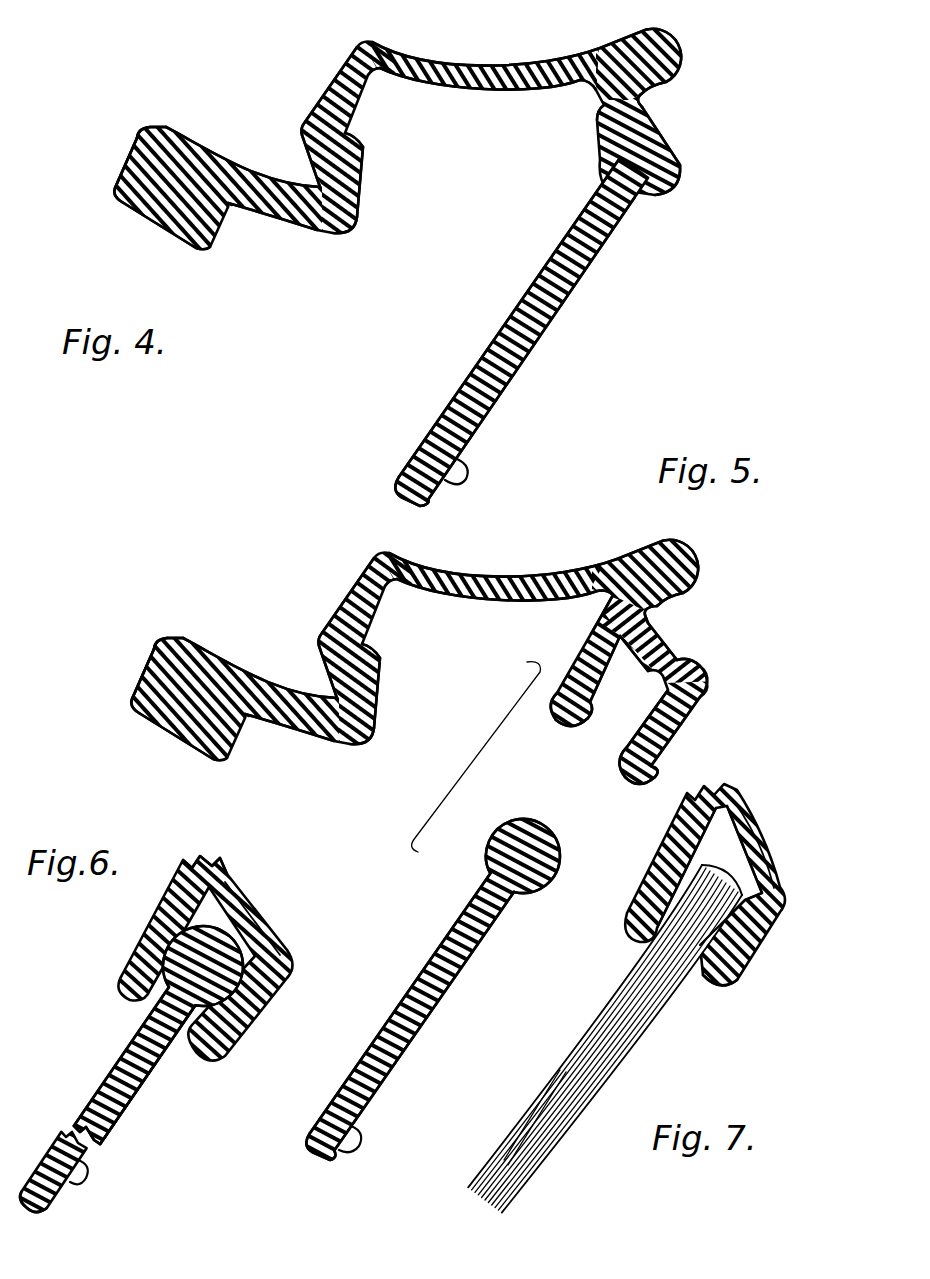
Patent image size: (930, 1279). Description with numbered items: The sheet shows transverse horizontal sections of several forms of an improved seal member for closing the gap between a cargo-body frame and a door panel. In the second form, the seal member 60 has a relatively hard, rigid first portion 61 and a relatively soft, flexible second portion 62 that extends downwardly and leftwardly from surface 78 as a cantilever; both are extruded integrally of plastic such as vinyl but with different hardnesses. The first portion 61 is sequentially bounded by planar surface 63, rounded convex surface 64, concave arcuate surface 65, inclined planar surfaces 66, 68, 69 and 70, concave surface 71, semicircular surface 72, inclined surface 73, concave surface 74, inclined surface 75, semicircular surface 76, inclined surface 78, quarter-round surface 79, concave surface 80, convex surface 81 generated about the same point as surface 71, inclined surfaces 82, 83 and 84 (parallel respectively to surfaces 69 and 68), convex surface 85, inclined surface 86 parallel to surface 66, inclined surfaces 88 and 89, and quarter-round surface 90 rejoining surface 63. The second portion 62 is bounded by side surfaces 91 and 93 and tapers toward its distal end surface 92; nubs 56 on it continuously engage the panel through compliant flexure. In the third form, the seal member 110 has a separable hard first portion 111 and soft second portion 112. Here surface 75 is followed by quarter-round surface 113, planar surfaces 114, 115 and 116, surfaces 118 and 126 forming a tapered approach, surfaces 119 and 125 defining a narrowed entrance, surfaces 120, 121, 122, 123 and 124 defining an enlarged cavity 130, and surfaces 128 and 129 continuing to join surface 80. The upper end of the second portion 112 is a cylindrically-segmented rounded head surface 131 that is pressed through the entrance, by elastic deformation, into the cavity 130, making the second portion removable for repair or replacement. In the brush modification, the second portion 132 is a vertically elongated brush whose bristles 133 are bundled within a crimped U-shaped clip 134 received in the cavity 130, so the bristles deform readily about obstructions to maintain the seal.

In FIG. 4, the nubs 56 is at (448, 474).
In FIG. 5, the nubs 56 is at (361, 1143).
In FIG. 6, the nubs 56 is at (88, 1172).
In FIG. 4, the seal member 60 is at (707, 54).
In FIG. 4, the first portion 61 is at (340, 44).
In FIG. 4, the second portion 62 is at (565, 310).
In FIG. 4, the upwardly- and leftwardly-facing planar surface 63 is at (118, 160).
In FIG. 5, the upwardly- and leftwardly-facing planar surface 63 is at (111, 669).
In FIG. 4, the upwardly-facing rounded convex surface 64 is at (145, 128).
In FIG. 5, the upwardly-facing rounded convex surface 64 is at (149, 620).
In FIG. 4, the concave arcuate surface 65 is at (172, 130).
In FIG. 5, the concave arcuate surface 65 is at (189, 619).
In FIG. 4, the upwardly- and rightwardly-facing inclined planar surface 66 is at (245, 175).
In FIG. 5, the upwardly- and rightwardly-facing inclined planar surface 66 is at (260, 667).
In FIG. 4, the leftwardly- and upwardly-facing inclined planar surface 68 is at (317, 180).
In FIG. 5, the leftwardly- and upwardly-facing inclined planar surface 68 is at (306, 672).
In FIG. 4, the leftwardly- and downwardly-facing inclined planar surface 69 is at (303, 148).
In FIG. 5, the leftwardly- and downwardly-facing inclined planar surface 69 is at (294, 639).
In FIG. 4, the leftwardly-facing inclined planar surface 70 is at (326, 86).
In FIG. 5, the leftwardly-facing inclined planar surface 70 is at (338, 586).
In FIG. 4, the upwardly-facing concave surface 71 is at (500, 50).
In FIG. 5, the upwardly-facing concave surface 71 is at (503, 548).
In FIG. 4, the upwardly-facing generally-semicircular surface 72 is at (666, 36).
In FIG. 5, the upwardly-facing generally-semicircular surface 72 is at (677, 558).
In FIG. 4, the rightwardly- and downwardly-facing inclined planar surface 73 is at (650, 90).
In FIG. 5, the rightwardly- and downwardly-facing inclined planar surface 73 is at (697, 586).
In FIG. 4, the rightwardly-facing concave surface 74 is at (638, 108).
In FIG. 5, the rightwardly-facing concave surface 74 is at (683, 609).
In FIG. 4, the upwardly- and rightwardly-facing inclined planar surface 75 is at (660, 138).
In FIG. 5, the upwardly- and rightwardly-facing inclined planar surface 75 is at (691, 641).
In FIG. 4, the rightwardly- and downwardly-facing generally-semicircular surface 76 is at (672, 192).
In FIG. 4, the leftwardly- and downwardly-facing inclined planar surface 78 is at (606, 186).
In FIG. 4, the leftwardly-facing quarter-round convex surface 79 is at (596, 127).
In FIG. 4, the leftwardly- and downwardly-facing concave surface 80 is at (597, 90).
In FIG. 5, the leftwardly- and downwardly-facing concave surface 80 is at (592, 604).
In FIG. 4, the downwardly-facing convex surface 81 is at (491, 93).
In FIG. 5, the downwardly-facing convex surface 81 is at (497, 604).
In FIG. 4, the rightwardly- and downwardly-facing inclined planar surface 82 is at (357, 100).
In FIG. 5, the rightwardly- and downwardly-facing inclined planar surface 82 is at (393, 599).
In FIG. 4, the rightwardly- and upwardly-facing inclined planar surface 83 is at (352, 135).
In FIG. 5, the rightwardly- and upwardly-facing inclined planar surface 83 is at (390, 645).
In FIG. 4, the rightwardly- and downwardly-facing inclined planar surface 84 is at (366, 187).
In FIG. 5, the rightwardly- and downwardly-facing inclined planar surface 84 is at (401, 693).
In FIG. 4, the downwardly-facing convex surface 85 is at (345, 228).
In FIG. 5, the downwardly-facing convex surface 85 is at (380, 738).
In FIG. 4, the leftwardly- and downwardly-facing inclined planar surface 86 is at (280, 225).
In FIG. 5, the leftwardly- and downwardly-facing inclined planar surface 86 is at (293, 743).
In FIG. 4, the rightwardly- and downwardly-facing inclined planar surface 88 is at (229, 210).
In FIG. 5, the rightwardly- and downwardly-facing inclined planar surface 88 is at (263, 741).
In FIG. 4, the leftwardly- and downwardly-facing inclined planar surface 89 is at (185, 240).
In FIG. 5, the leftwardly- and downwardly-facing inclined planar surface 89 is at (183, 741).
In FIG. 4, the leftwardly-facing quarter-round convex surface 90 is at (116, 208).
In FIG. 5, the leftwardly-facing quarter-round convex surface 90 is at (116, 691).
In FIG. 4, the leftwardly- and upwardly-facing inclined planar surface 91 is at (497, 330).
In FIG. 5, the leftwardly- and upwardly-facing inclined planar surface 91 is at (406, 985).
In FIG. 6, the leftwardly- and upwardly-facing inclined planar surface 91 is at (117, 1058).
In FIG. 4, the leftwardly- and downwardly-facing inclined planar end surface 92 is at (398, 495).
In FIG. 5, the leftwardly- and downwardly-facing inclined planar end surface 92 is at (310, 1170).
In FIG. 6, the leftwardly- and downwardly-facing inclined planar end surface 92 is at (60, 1215).
In FIG. 4, the rightwardly- and downwardly-facing inclined planar surface 93 is at (512, 370).
In FIG. 5, the rightwardly- and downwardly-facing inclined planar surface 93 is at (440, 1002).
In FIG. 6, the rightwardly- and downwardly-facing inclined planar surface 93 is at (134, 1103).
In FIG. 5, the seal member 110 is at (422, 633).
In FIG. 5, the first portion 111 is at (241, 582).
In FIG. 6, the first portion 111 is at (118, 936).
In FIG. 7, the first portion 111 is at (763, 838).
In FIG. 5, the second portion 112 is at (422, 934).
In FIG. 6, the second portion 112 is at (46, 1140).
In FIG. 5, the rightwardly-facing quarter-round convex surface 113 is at (736, 694).
In FIG. 5, the downwardly- and rightwardly-facing planar surface 114 is at (704, 745).
In FIG. 5, the downwardly-facing quarter-round surface 115 is at (630, 808).
In FIG. 5, the downwardly- and leftwardly-facing planar surface 116 is at (614, 780).
In FIG. 5, the leftwardly- and upwardly-facing planar surface 118 is at (611, 746).
In FIG. 5, the leftwardly- and upwardly-facing planar surface 119 is at (597, 750).
In FIG. 5, the upwardly- and rightwardly-facing planar surface 120 is at (688, 764).
In FIG. 5, the leftwardly- and upwardly-facing planar surface 121 is at (723, 714).
In FIG. 5, the downwardly- and leftwardly-facing planar surface 122 is at (723, 670).
In FIG. 5, the downwardly- and rightwardly-facing planar surface 123 is at (582, 615).
In FIG. 5, the upwardly- and rightwardly-facing planar surface 124 is at (553, 677).
In FIG. 5, the downwardly- and rightwardly-facing planar surface 125 is at (537, 729).
In FIG. 5, the downwardly- and rightwardly-facing planar surface 126 is at (545, 730).
In FIG. 5, the leftwardly-facing quarter-round surface 128 is at (553, 702).
In FIG. 5, the upwardly- and leftwardly-facing planar surface 129 is at (564, 649).
In FIG. 5, the enlarged cavity 130 is at (629, 669).
In FIG. 6, the enlarged cavity 130 is at (276, 928).
In FIG. 7, the enlarged cavity 130 is at (745, 962).
In FIG. 5, the cylindrically-segmented surface 131 is at (498, 832).
In FIG. 6, the cylindrically-segmented surface 131 is at (232, 905).
In FIG. 7, the second portion 132 is at (628, 1050).
In FIG. 7, the bristles 133 is at (507, 1127).
In FIG. 7, the clip 134 is at (642, 905).